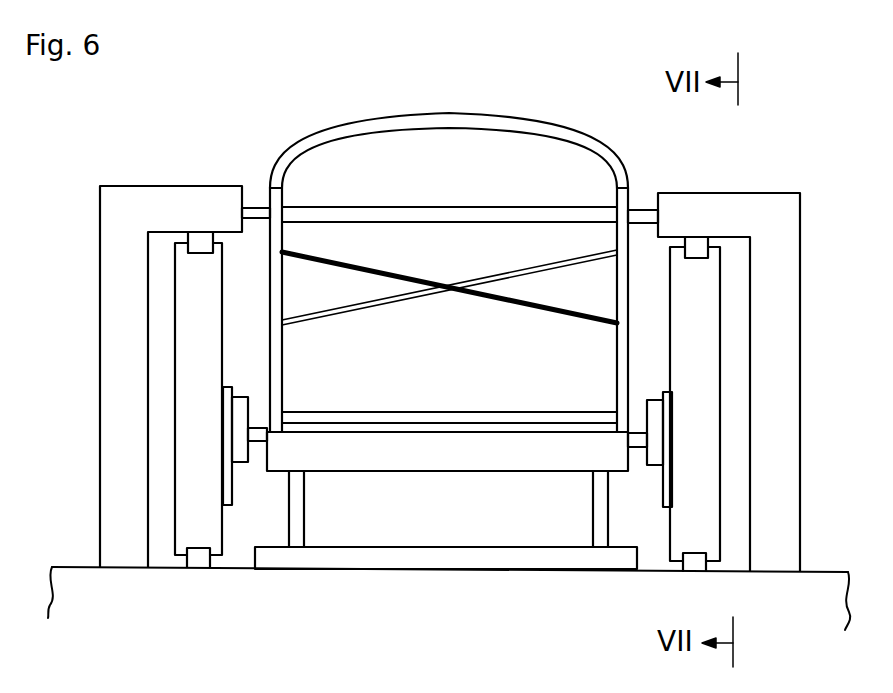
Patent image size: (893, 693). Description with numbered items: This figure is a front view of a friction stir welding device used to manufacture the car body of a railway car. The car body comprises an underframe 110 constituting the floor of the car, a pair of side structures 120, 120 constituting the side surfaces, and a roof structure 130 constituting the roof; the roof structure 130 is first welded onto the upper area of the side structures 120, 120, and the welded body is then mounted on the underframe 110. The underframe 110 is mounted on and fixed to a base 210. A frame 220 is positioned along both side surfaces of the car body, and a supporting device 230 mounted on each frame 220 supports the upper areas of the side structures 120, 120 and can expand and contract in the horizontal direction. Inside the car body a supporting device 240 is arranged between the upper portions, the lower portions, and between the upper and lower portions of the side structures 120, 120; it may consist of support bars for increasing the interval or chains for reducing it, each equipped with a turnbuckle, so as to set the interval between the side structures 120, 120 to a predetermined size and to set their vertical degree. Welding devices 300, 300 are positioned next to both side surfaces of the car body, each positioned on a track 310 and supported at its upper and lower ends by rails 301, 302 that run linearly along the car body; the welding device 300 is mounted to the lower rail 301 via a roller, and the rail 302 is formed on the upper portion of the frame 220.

The underframe 110 is at (415, 473).
The side structure 120 is at (282, 366).
The roof structure 130 is at (445, 117).
The base 210 is at (302, 512).
The frame 220 is at (148, 200).
The supporting device 230 is at (257, 206).
The supporting device 240 is at (397, 215).
The welding device 300 is at (237, 430).
The rail 301 is at (200, 252).
The rail 302 is at (203, 562).
The track 310 is at (180, 503).